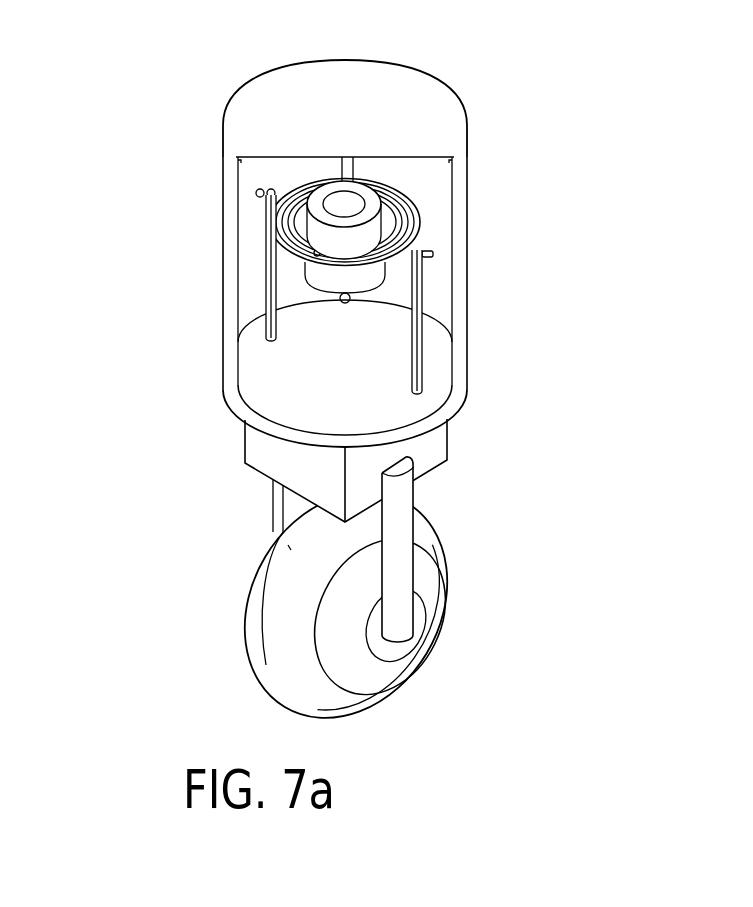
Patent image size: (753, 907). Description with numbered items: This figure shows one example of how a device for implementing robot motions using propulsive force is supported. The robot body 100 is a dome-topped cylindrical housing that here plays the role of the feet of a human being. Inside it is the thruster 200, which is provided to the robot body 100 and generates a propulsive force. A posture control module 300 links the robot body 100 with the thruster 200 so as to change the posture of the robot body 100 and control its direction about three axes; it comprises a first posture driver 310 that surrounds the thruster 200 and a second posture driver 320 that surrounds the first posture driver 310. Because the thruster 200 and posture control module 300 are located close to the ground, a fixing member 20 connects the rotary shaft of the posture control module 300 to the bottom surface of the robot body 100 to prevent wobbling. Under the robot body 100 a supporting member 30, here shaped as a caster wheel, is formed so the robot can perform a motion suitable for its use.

The robot body 100 is at (271, 94).
The thruster 200 is at (368, 178).
The posture control module 300 is at (118, 208).
The first posture driver 310 is at (275, 242).
The second posture driver 320 is at (262, 200).
The fixing member 20 is at (272, 308).
The supporting member 30 is at (284, 600).